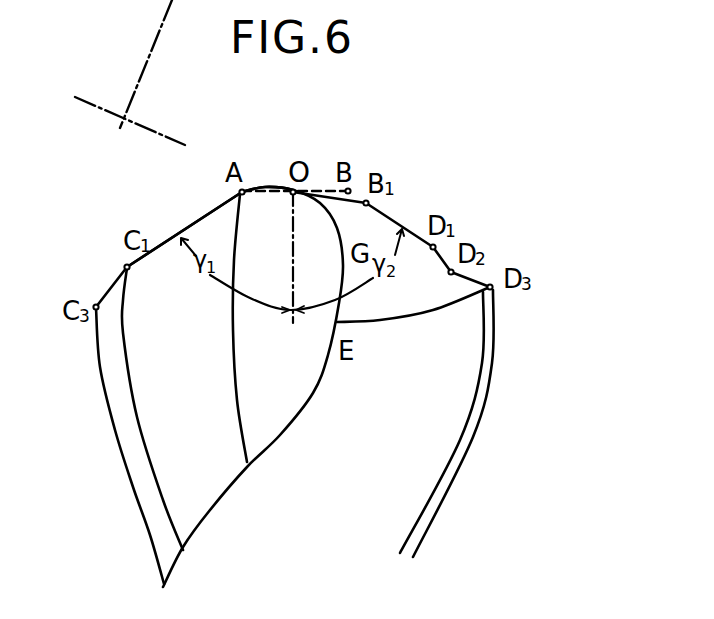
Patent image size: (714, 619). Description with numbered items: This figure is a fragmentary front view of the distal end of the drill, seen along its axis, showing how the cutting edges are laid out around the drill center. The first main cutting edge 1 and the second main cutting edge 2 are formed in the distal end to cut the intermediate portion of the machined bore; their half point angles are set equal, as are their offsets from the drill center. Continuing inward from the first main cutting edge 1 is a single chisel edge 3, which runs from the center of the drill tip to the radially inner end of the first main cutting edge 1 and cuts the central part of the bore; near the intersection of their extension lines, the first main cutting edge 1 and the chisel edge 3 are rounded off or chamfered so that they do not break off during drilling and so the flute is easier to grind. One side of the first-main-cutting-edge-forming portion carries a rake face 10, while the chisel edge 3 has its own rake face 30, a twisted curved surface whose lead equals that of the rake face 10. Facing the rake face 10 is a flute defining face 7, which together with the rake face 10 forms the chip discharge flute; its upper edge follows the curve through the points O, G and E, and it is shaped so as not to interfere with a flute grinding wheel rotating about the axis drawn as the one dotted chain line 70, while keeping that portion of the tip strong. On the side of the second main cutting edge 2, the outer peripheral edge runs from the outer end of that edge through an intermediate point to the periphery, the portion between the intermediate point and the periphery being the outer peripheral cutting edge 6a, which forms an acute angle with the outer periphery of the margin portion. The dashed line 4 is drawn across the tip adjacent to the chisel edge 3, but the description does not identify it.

The one dotted chain line 70 is at (103, 107).
The rake face 10 is at (173, 246).
The first main cutting edge 1 is at (207, 214).
The chisel edge 3 is at (270, 222).
The rake face 30 is at (270, 191).
The tangent line 4 is at (318, 187).
The second main cutting edge 2 is at (396, 218).
The flute defining face 7 is at (332, 228).
The outer peripheral cutting edge 6a is at (484, 284).